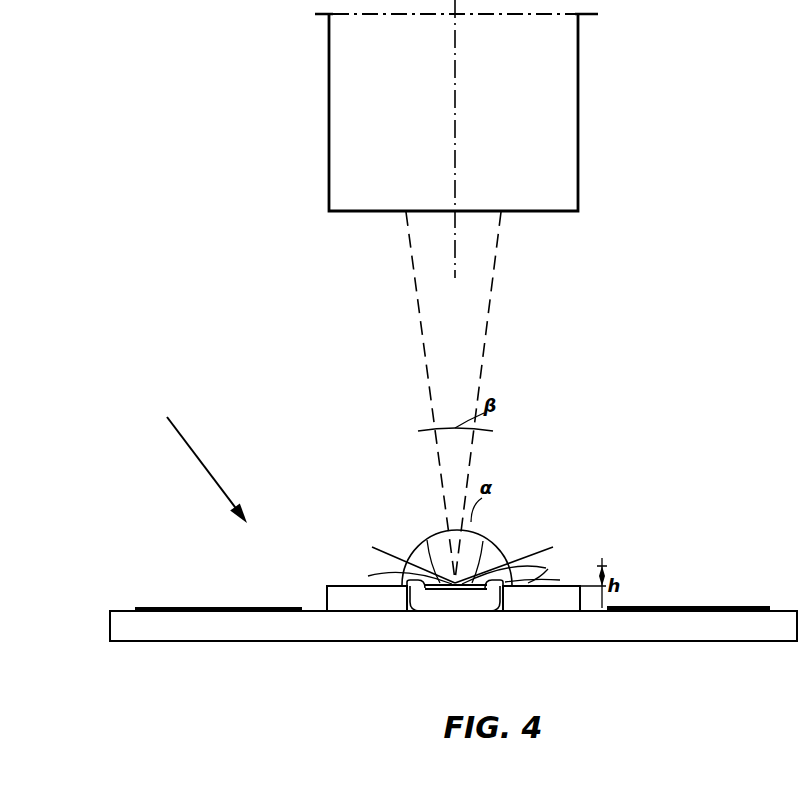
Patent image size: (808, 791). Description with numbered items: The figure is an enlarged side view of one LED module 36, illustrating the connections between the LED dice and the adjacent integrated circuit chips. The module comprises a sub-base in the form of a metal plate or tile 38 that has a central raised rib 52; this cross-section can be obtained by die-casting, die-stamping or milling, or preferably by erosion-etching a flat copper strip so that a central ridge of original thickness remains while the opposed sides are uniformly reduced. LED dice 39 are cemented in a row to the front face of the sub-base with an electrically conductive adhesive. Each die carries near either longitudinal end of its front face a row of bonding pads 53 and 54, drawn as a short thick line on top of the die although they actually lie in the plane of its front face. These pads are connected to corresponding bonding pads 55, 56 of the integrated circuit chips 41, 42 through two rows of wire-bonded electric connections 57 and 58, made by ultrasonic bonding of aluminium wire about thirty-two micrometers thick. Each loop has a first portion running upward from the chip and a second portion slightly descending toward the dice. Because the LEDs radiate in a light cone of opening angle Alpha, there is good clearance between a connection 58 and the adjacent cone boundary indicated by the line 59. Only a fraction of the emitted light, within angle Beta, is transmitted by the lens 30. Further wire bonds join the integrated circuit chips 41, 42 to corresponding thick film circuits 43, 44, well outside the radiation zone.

The lens 30 is at (568, 118).
The LED module 36 is at (190, 449).
The metal plate or tile 38 is at (226, 632).
The LED dice 39 is at (448, 597).
The integrated circuit chip 41 is at (368, 600).
The integrated circuit chip 42 is at (545, 602).
The thick film circuit 43 is at (192, 606).
The thick film circuit 44 is at (694, 606).
The central raised rib 52 is at (470, 606).
The bonding pads 53 is at (422, 547).
The bonding pads 54 is at (483, 541).
The bonding pads 55 is at (368, 574).
The bonding pads 56 is at (560, 576).
The wire-bonded electric connections 57 is at (372, 548).
The wire-bonded electric connections 58 is at (553, 547).
The line indicating boundary of light cone 59 is at (515, 553).